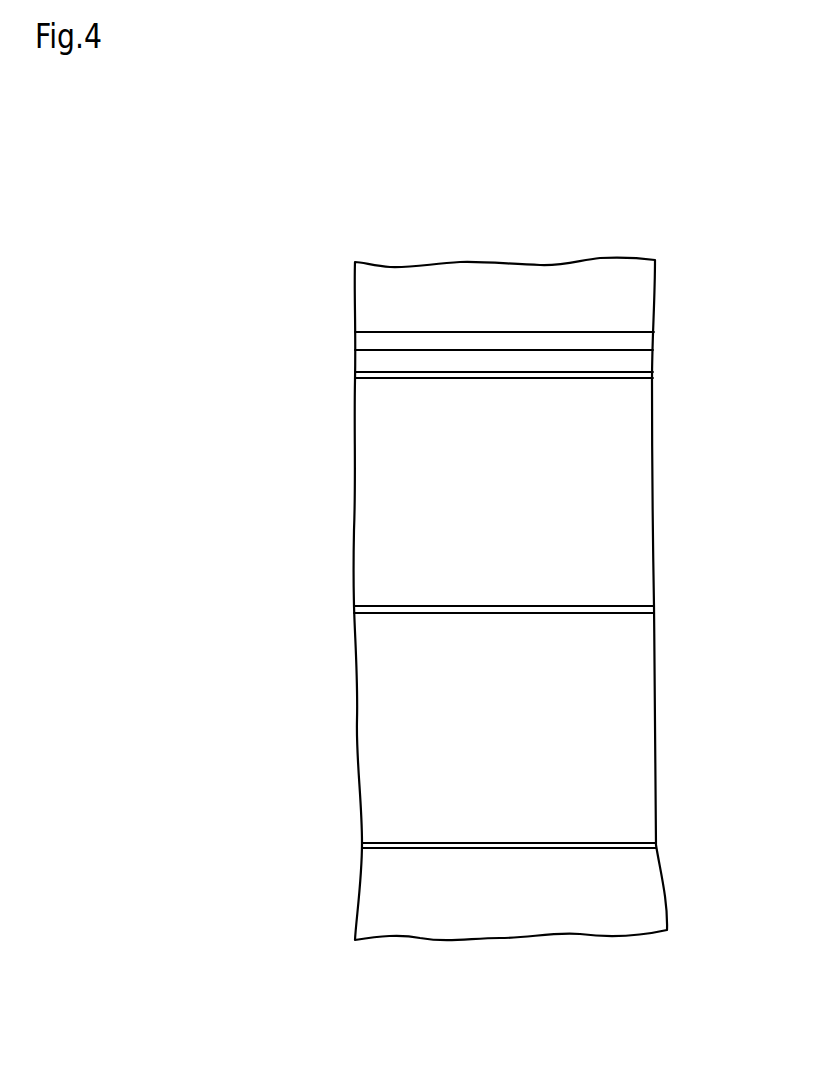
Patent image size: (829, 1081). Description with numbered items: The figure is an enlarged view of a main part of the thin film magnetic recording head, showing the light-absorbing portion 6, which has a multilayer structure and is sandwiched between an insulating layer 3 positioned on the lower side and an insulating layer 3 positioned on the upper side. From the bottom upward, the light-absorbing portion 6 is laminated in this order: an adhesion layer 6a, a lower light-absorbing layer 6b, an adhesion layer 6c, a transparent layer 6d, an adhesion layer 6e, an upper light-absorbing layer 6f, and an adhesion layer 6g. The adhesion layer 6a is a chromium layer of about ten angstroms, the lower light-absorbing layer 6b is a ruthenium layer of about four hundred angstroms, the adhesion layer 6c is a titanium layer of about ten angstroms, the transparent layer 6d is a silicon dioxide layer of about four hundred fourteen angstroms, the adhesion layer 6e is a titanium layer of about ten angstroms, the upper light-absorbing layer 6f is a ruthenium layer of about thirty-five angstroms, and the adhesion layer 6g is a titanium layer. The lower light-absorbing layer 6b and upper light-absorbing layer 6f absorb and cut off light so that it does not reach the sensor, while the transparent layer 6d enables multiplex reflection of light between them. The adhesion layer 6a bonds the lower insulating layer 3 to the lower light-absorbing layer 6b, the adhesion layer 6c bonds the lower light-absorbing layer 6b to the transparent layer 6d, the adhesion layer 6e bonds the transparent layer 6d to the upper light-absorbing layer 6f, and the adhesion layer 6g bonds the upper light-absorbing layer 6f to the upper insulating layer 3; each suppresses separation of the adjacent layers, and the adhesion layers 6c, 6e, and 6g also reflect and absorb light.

The insulating layer 3 is at (368, 292).
The light-absorbing portion 6 is at (750, 301).
The adhesion layer 6a is at (648, 843).
The lower light-absorbing layer 6b is at (648, 769).
The adhesion layer 6c is at (655, 612).
The transparent layer 6d is at (648, 534).
The adhesion layer 6e is at (654, 375).
The upper light-absorbing layer 6f is at (648, 359).
The adhesion layer 6g is at (650, 341).